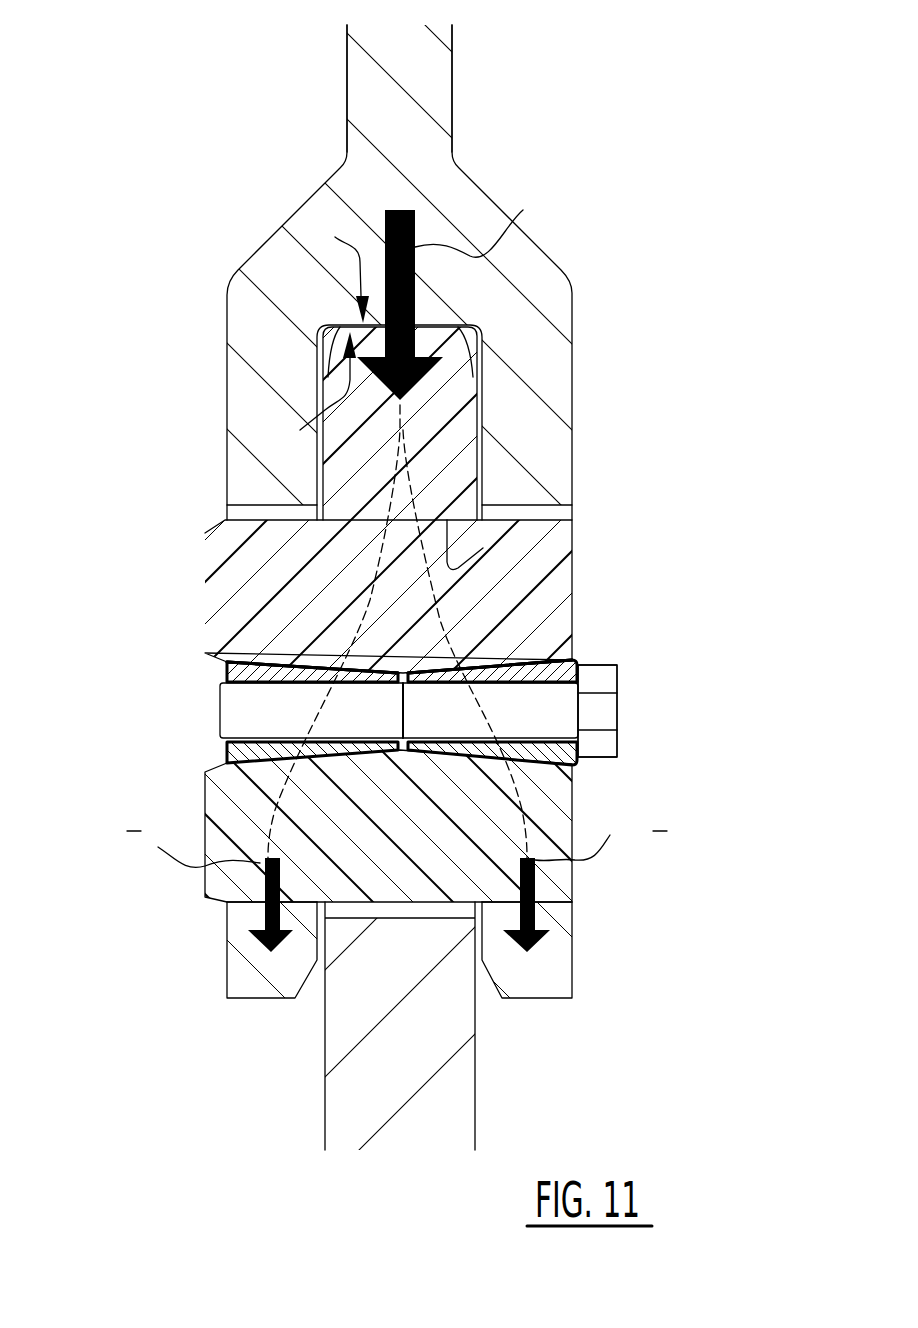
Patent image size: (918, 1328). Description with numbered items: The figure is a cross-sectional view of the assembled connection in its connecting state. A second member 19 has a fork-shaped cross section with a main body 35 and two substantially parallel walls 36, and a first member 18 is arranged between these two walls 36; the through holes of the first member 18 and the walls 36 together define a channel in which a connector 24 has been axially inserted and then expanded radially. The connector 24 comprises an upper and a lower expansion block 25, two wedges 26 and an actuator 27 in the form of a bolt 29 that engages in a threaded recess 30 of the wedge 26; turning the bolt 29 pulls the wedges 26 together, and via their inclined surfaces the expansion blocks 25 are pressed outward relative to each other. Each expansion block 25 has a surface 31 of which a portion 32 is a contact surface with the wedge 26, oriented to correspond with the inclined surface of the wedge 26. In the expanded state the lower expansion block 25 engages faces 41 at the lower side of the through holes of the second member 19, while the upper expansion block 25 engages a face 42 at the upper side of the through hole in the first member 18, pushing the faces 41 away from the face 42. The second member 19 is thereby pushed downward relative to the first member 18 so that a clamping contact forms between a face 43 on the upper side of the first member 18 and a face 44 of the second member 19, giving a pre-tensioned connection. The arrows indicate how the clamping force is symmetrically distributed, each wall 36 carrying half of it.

The first member 18 is at (387, 1075).
The second member 19 is at (284, 142).
The connector 24 is at (150, 534).
The expansion block 25 is at (543, 581).
The wedge 26 is at (537, 665).
The actuator 27 is at (602, 712).
The bolt 29 is at (602, 712).
The threaded recess 30 is at (255, 712).
The surface 31 is at (303, 663).
The portion 32 is at (303, 663).
The main body 35 is at (420, 70).
The walls 36 is at (247, 403).
The faces 41 is at (247, 900).
The face 42 is at (483, 548).
The face 43 is at (339, 264).
The face 44 is at (312, 397).